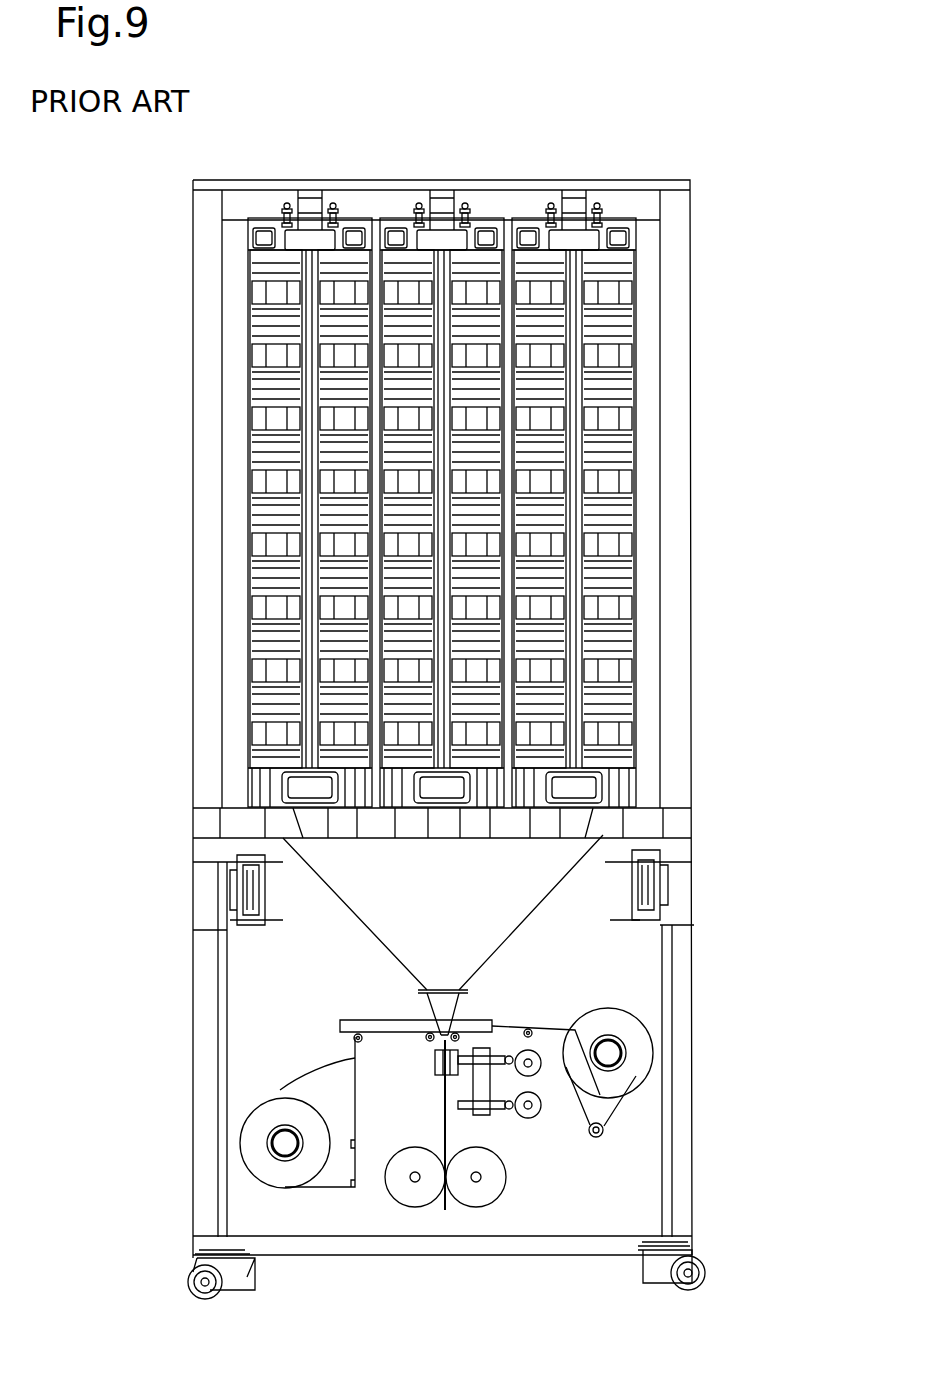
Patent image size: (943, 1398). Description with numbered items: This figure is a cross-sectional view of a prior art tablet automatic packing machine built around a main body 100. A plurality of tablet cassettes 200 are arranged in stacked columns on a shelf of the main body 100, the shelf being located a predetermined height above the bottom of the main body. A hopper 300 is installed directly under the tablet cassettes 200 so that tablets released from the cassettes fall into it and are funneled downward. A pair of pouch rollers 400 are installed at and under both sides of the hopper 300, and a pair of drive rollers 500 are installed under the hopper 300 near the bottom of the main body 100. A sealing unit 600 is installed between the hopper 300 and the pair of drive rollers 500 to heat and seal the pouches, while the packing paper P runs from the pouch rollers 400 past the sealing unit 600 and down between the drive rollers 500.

The main body 100 is at (685, 948).
The tablet cassettes 200 is at (607, 545).
The hopper 300 is at (398, 935).
The pouch rollers 400 is at (262, 1150).
The drive rollers 500 is at (408, 1193).
The sealing unit 600 is at (435, 1060).
The packing paper P is at (445, 1120).